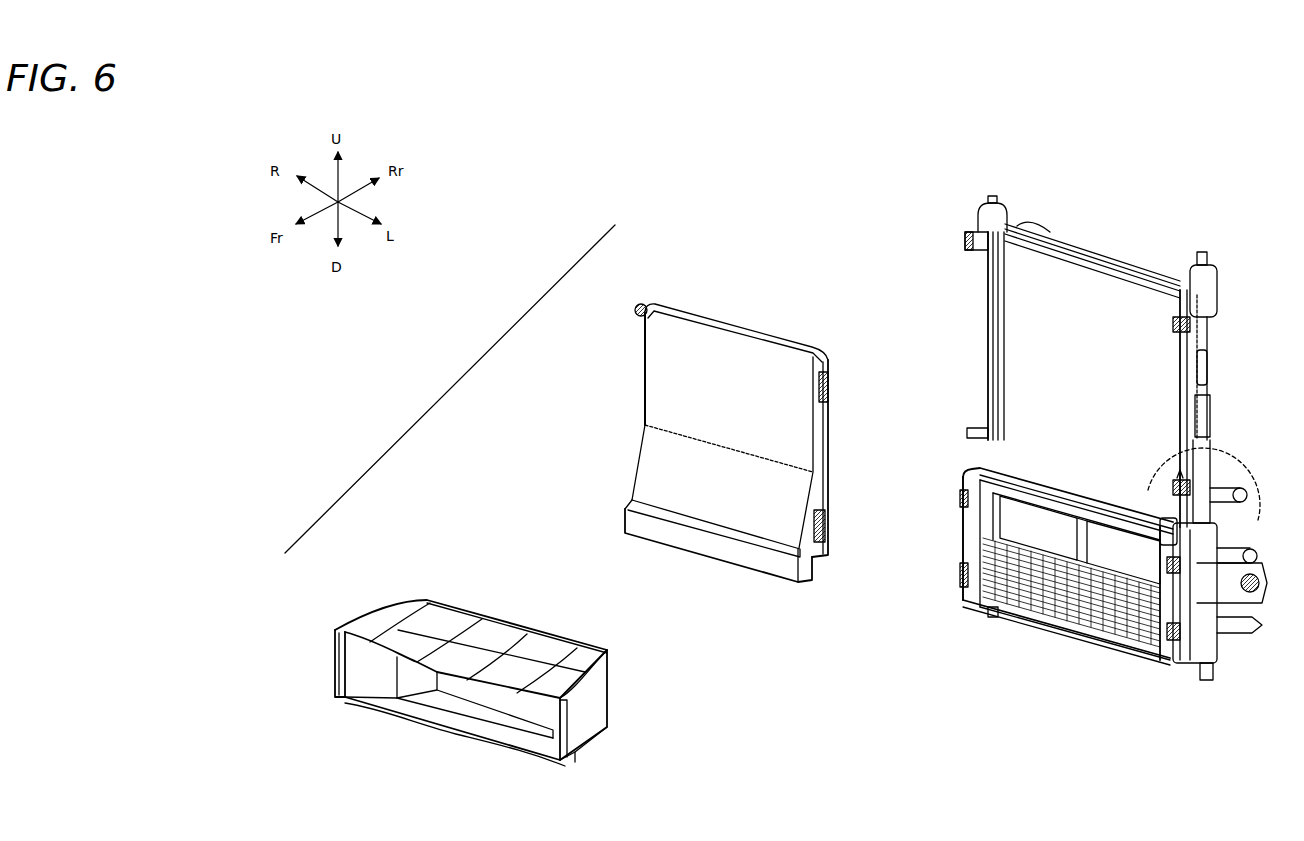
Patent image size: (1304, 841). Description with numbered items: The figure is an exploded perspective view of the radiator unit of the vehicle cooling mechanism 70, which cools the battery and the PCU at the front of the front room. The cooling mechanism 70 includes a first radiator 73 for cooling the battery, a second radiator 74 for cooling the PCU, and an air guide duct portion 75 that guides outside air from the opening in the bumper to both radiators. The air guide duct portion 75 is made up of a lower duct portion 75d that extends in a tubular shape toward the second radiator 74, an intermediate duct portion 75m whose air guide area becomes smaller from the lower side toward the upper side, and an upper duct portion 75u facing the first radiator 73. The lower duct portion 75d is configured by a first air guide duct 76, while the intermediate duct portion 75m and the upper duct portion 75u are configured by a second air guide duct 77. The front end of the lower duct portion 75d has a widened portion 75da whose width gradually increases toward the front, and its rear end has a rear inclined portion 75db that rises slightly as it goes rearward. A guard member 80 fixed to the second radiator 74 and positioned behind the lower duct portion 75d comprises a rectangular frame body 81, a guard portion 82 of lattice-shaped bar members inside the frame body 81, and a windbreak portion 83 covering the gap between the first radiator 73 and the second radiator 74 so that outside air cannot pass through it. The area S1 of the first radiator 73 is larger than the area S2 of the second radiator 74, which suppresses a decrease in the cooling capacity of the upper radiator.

The cooling mechanism 70 is at (836, 172).
The first radiator 73 is at (1095, 283).
The second radiator 74 is at (1128, 562).
The air guide duct portion 75 is at (556, 509).
The upper duct portion 75u is at (660, 384).
The intermediate duct portion 75m is at (648, 476).
The lower duct portion 75d is at (400, 648).
The widened portion 75da is at (366, 702).
The rear inclined portion 75db is at (600, 665).
The first air guide duct 76 is at (502, 675).
The second air guide duct 77 is at (677, 443).
The guard member 80 is at (1046, 628).
The frame body 81 is at (972, 522).
The guard portion 82 is at (1013, 615).
The windbreak portion 83 is at (1220, 466).
The area of the first radiator S1 is at (1208, 378).
The area of the second radiator S2 is at (1235, 549).